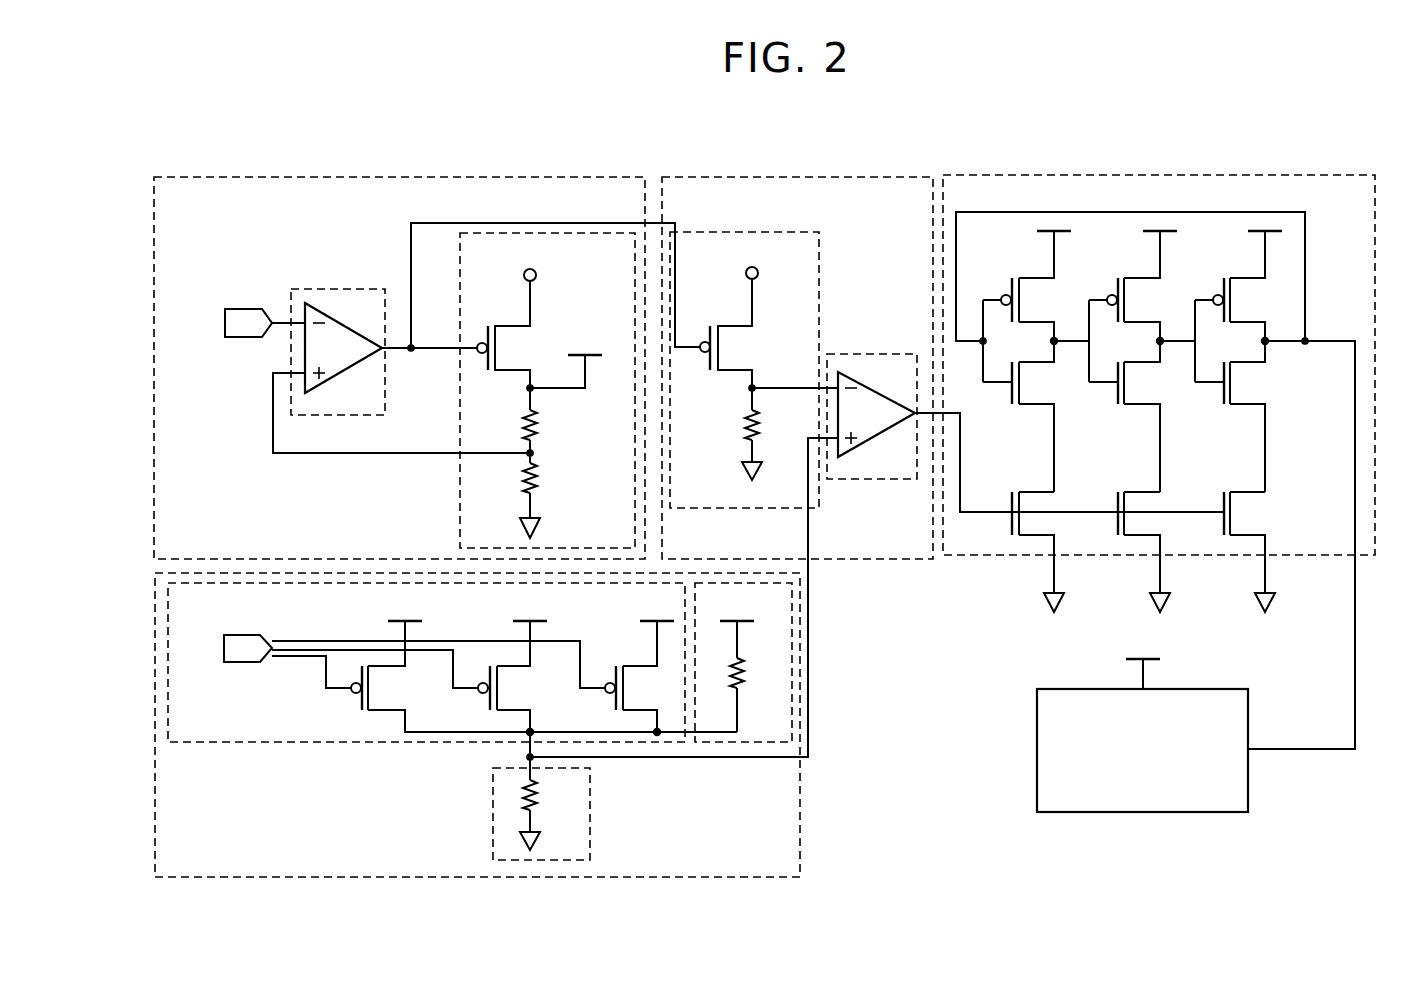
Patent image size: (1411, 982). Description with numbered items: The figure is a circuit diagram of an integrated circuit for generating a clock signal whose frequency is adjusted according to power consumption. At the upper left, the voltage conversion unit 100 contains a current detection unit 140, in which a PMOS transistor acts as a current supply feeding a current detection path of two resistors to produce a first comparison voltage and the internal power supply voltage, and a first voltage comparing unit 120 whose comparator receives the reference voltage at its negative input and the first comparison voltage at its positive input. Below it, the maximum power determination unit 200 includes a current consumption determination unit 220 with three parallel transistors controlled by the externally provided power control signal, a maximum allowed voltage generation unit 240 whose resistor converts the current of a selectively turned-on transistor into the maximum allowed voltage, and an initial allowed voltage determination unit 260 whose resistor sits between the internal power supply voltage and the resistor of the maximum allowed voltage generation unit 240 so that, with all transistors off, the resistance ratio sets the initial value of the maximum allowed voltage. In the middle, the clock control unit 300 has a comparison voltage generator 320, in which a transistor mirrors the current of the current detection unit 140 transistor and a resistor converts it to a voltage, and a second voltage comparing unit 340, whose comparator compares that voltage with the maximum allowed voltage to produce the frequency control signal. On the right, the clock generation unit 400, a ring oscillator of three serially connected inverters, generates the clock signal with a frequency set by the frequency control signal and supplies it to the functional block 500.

The voltage conversion unit 100 is at (398, 177).
The first voltage comparing unit 120 is at (342, 289).
The current detection unit 140 is at (545, 233).
The maximum power determination unit 200 is at (802, 812).
The current consumption determination unit 220 is at (375, 742).
The maximum allowed voltage generation unit 240 is at (493, 825).
The initial allowed voltage determination unit 260 is at (725, 742).
The clock control unit 300 is at (790, 177).
The comparison voltage generator 320 is at (738, 232).
The second voltage comparing unit 340 is at (870, 354).
The clock generation unit 400 is at (1160, 175).
The functional block 500 is at (1037, 752).